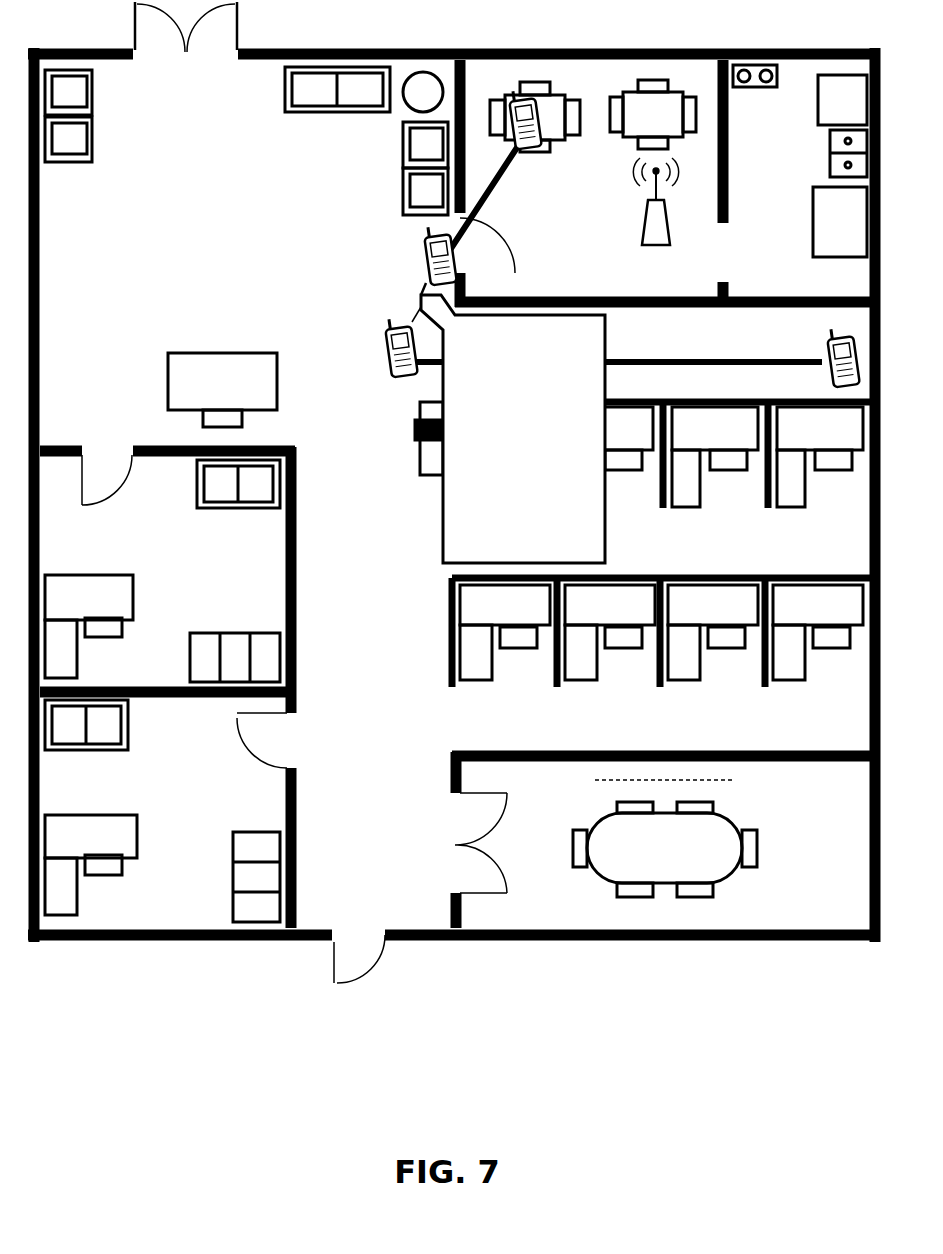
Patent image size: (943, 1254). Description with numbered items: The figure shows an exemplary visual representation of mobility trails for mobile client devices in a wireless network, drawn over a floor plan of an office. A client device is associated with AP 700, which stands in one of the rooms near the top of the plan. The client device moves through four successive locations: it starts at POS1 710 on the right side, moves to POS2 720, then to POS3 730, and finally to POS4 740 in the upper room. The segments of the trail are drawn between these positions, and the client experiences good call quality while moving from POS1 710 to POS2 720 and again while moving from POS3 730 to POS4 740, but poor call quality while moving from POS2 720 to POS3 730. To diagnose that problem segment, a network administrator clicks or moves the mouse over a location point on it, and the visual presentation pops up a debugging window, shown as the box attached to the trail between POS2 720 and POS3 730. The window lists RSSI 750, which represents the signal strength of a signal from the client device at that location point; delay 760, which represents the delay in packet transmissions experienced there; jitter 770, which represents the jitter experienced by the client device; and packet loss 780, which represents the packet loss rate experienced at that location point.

The AP 700 is at (655, 227).
The POS1 710 is at (801, 350).
The POS2 720 is at (359, 360).
The POS3 730 is at (401, 261).
The POS4 740 is at (546, 160).
The RSSI 750 is at (496, 349).
The delay 760 is at (508, 399).
The jitter 770 is at (508, 449).
The packet loss 780 is at (502, 509).